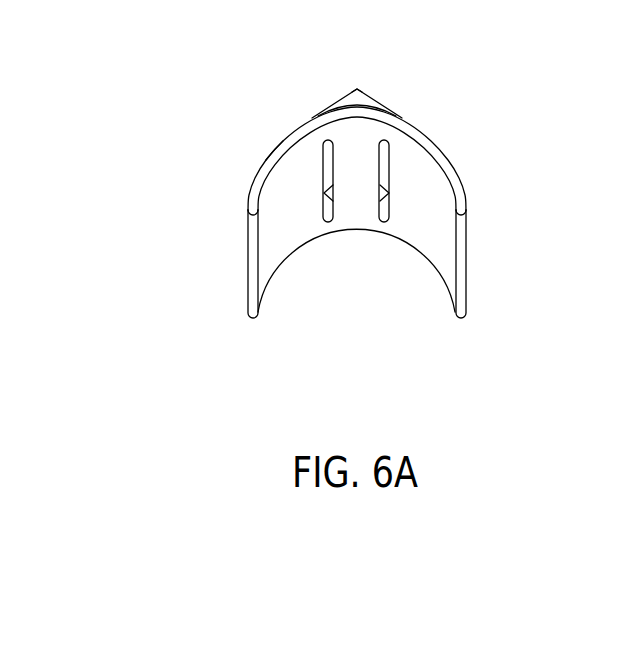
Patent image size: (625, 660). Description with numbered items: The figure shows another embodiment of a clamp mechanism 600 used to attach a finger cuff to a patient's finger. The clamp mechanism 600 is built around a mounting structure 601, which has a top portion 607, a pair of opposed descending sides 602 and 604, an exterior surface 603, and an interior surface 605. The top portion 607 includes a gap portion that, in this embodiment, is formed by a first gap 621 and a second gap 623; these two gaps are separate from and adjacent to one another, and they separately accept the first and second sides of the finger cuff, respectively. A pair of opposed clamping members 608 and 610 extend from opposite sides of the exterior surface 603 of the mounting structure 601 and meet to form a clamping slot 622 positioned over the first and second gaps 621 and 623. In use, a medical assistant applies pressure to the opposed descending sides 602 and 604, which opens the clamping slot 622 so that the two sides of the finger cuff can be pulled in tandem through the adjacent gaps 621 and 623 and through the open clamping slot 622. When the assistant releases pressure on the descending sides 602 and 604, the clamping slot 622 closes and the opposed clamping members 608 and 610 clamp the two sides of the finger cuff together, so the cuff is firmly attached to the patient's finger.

The clamp mechanism 600 is at (150, 100).
The mounting structure 601 is at (440, 153).
The opposed descending side 602 is at (460, 182).
The exterior surface 603 is at (278, 147).
The opposed descending side 604 is at (252, 195).
The interior surface 605 is at (258, 280).
The top portion 607 is at (418, 130).
The clamping member 608 is at (382, 102).
The clamping member 610 is at (332, 103).
The first gap 621 is at (385, 226).
The clamping slot 622 is at (357, 87).
The second gap 623 is at (328, 226).